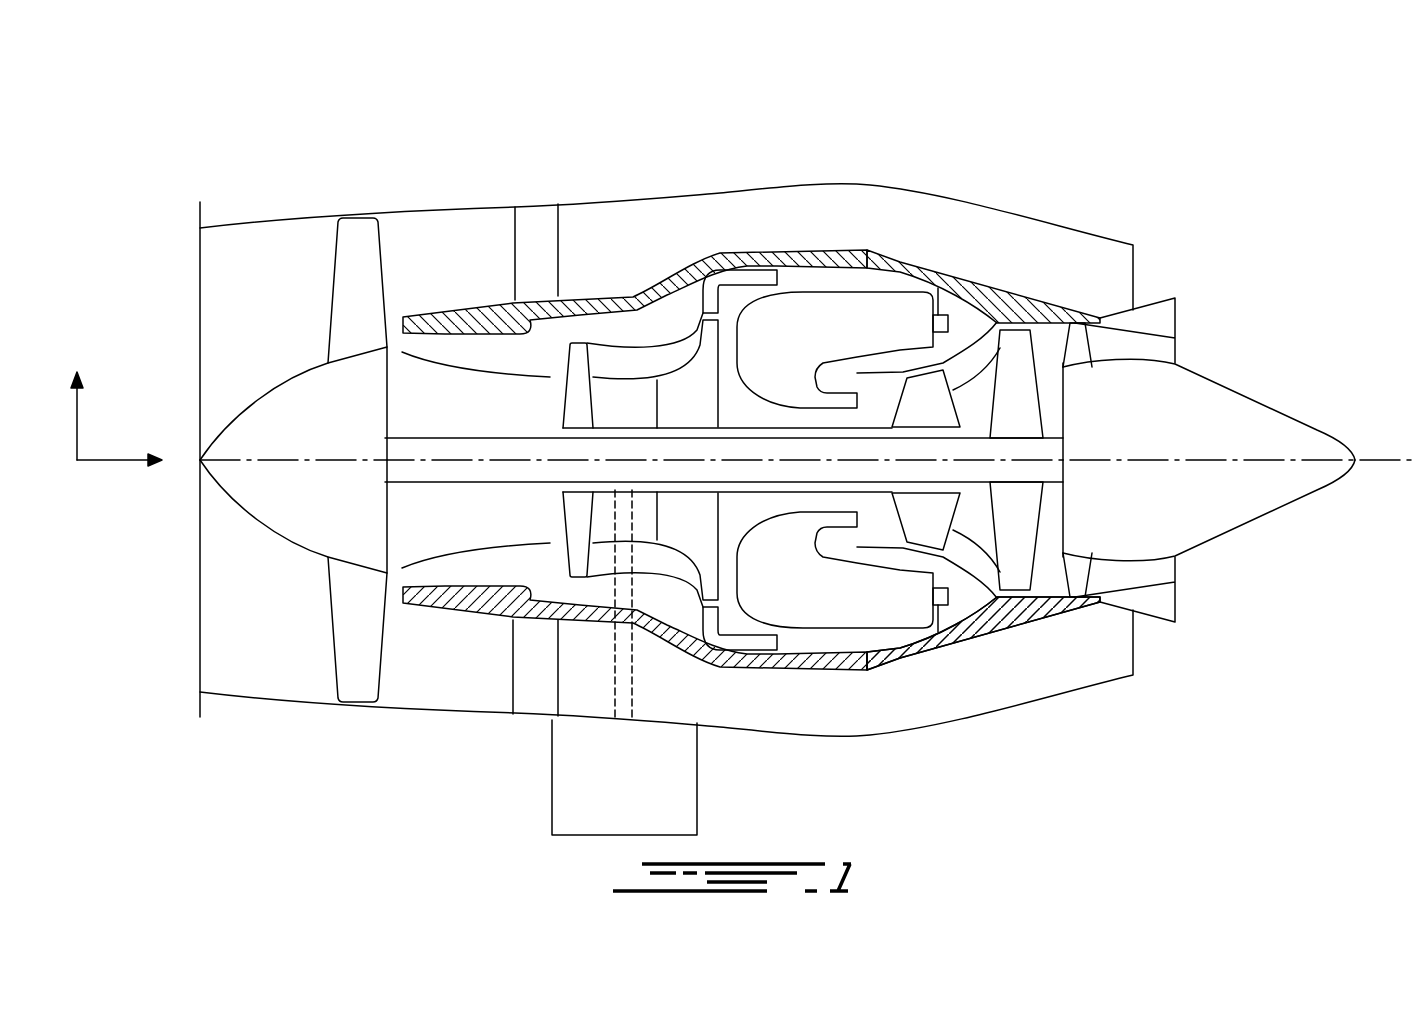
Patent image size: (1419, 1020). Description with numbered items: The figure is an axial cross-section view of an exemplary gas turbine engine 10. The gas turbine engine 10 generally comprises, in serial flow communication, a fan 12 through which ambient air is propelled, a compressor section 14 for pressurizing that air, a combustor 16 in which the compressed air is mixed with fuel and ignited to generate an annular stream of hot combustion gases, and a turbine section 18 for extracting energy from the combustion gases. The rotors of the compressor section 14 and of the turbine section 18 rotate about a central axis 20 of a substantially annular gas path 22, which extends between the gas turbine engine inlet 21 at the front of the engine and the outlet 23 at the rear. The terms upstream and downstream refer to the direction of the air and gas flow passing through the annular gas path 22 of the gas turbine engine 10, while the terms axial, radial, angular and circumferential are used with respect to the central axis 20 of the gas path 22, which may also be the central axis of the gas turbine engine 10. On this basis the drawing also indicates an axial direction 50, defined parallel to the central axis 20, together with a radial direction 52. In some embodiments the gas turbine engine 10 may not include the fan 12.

The gas turbine engine 10 is at (1040, 166).
The fan 12 is at (353, 627).
The compressor section 14 is at (640, 370).
The combustor 16 is at (837, 313).
The turbine section 18 is at (972, 527).
The central axis 20 is at (1392, 458).
The gas turbine engine inlet 21 is at (188, 312).
The annular gas path 22 is at (473, 338).
The outlet 23 is at (1162, 270).
The axial direction 50 is at (115, 467).
The radial direction 52 is at (78, 417).